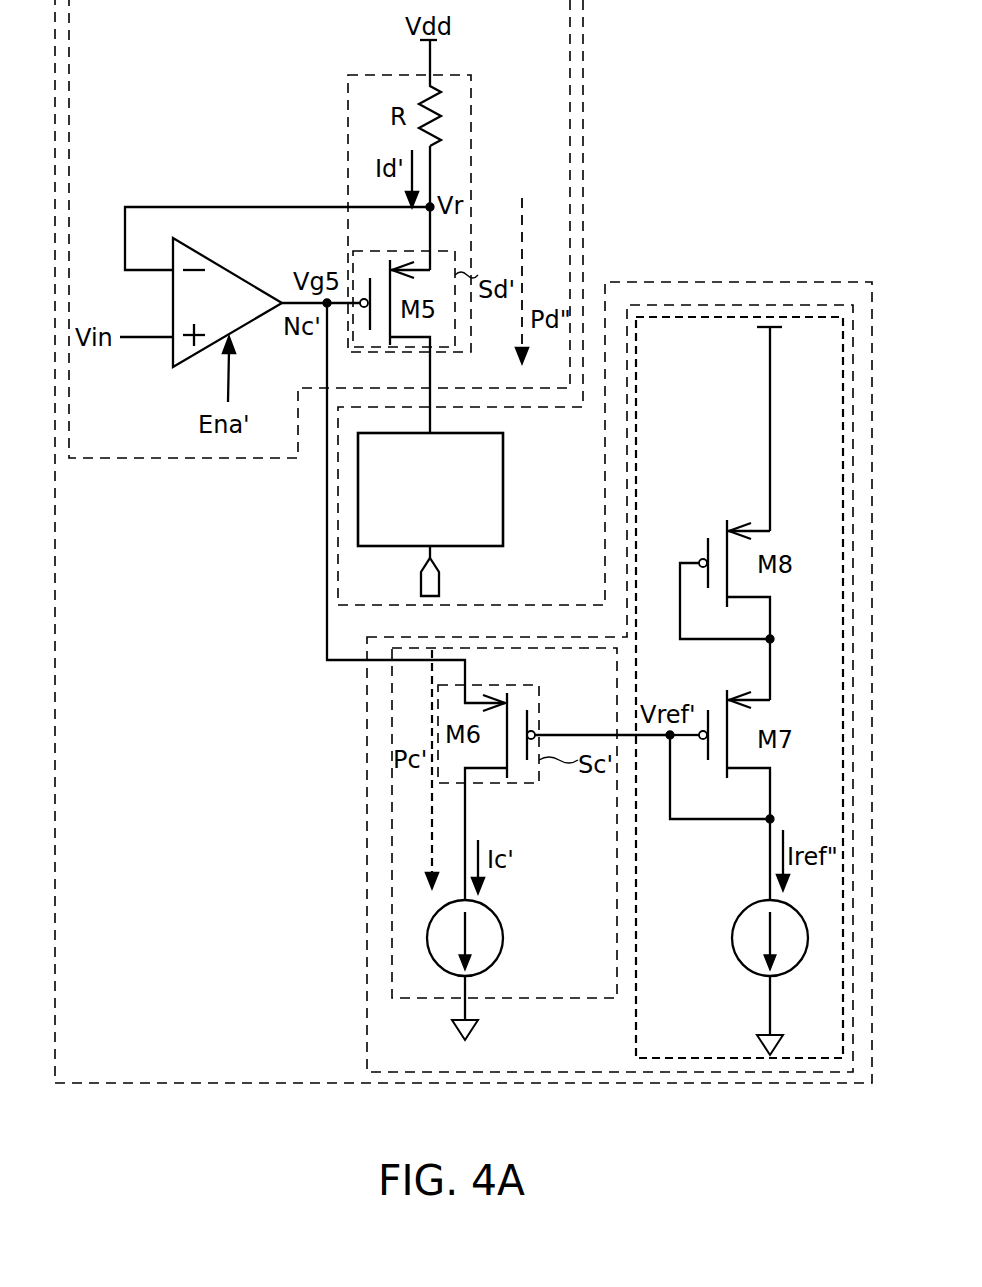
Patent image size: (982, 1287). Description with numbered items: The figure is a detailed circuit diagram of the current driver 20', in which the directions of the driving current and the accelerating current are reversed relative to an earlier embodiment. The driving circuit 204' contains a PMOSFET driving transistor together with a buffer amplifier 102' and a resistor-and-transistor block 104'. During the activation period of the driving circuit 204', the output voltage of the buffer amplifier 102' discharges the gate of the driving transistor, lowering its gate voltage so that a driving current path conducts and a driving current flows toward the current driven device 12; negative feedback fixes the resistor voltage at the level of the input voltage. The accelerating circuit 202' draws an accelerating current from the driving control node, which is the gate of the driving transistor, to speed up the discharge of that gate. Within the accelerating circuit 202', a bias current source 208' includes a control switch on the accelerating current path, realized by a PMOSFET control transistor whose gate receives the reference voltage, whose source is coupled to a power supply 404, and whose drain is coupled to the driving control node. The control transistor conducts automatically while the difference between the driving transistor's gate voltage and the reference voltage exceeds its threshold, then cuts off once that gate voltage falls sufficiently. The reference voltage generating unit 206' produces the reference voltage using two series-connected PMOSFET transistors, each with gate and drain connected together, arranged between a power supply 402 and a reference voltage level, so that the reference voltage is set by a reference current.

The current driver 20' is at (463, 541).
The driving circuit 204' is at (369, 229).
The accelerating circuit 202' is at (564, 688).
The bias current source 208' is at (457, 823).
The reference voltage generating unit 206' is at (739, 644).
The resistor and switch transistor unit 104' is at (447, 213).
The buffer amplifier 102' is at (227, 295).
The current driven device 12 is at (503, 493).
The power supply 404 is at (503, 935).
The power supply 402 is at (730, 940).